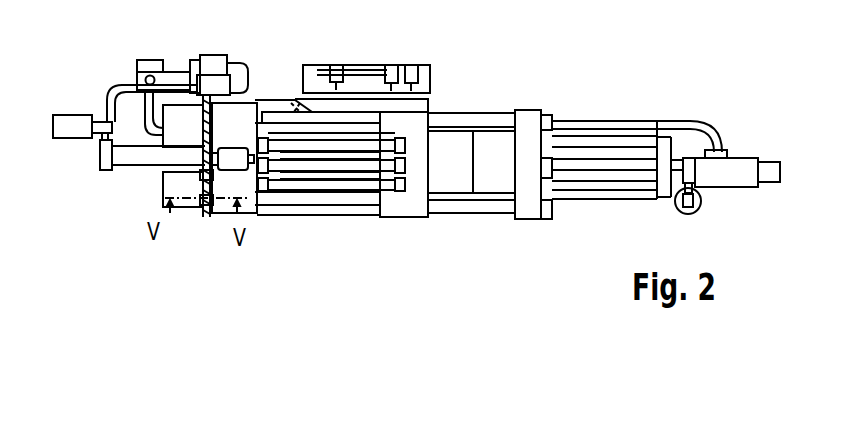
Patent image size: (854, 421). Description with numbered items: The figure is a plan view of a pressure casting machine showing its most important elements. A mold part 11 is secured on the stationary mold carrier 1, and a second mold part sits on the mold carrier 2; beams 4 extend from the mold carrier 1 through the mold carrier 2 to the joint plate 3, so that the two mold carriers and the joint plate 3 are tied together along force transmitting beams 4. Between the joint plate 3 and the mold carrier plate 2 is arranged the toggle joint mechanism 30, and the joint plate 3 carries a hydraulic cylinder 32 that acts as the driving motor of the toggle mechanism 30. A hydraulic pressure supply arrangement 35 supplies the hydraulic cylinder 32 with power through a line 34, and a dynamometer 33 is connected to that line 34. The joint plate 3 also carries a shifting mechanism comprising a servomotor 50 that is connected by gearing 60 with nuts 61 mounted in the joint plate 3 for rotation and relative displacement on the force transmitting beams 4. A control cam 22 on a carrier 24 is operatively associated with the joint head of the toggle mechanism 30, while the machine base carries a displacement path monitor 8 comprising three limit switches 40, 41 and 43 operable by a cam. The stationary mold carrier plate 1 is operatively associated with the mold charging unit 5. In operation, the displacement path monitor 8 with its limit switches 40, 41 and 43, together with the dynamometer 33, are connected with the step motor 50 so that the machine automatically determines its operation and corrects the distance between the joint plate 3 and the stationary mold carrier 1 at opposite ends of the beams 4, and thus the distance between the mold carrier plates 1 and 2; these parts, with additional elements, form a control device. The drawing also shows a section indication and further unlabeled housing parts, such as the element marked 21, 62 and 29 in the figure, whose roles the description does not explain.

The mold carrier 1 is at (530, 207).
The mold carrier 2 is at (396, 208).
The joint plate 3 is at (236, 215).
The beam 4 is at (468, 208).
The mold charging unit 5 is at (600, 112).
The displacement path monitor 8 is at (357, 60).
The mold part 11 is at (498, 188).
The connecting section 21 is at (452, 190).
The control cam 22 is at (428, 95).
The carrier 24 is at (296, 99).
The fixed plates 29 is at (292, 193).
The toggle joint mechanism 30 is at (345, 192).
The hydraulic cylinder 32 is at (130, 170).
The dynamometer 33 is at (80, 112).
The line 34 is at (108, 100).
The hydraulic pressure supply arrangement 35 is at (185, 57).
The limit switch 40 is at (333, 63).
The limit switch 41 is at (388, 66).
The limit switch 43 is at (409, 65).
The servomotor 50 is at (237, 152).
The gearing 60 is at (207, 217).
The nuts 61 is at (202, 121).
The lower housing 62 is at (202, 178).